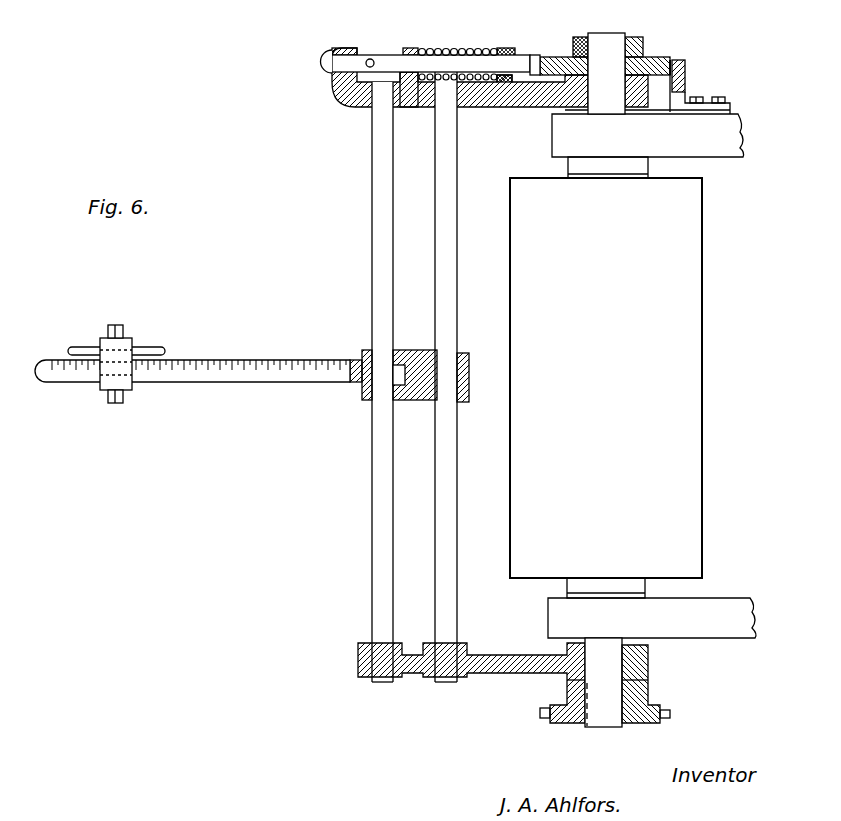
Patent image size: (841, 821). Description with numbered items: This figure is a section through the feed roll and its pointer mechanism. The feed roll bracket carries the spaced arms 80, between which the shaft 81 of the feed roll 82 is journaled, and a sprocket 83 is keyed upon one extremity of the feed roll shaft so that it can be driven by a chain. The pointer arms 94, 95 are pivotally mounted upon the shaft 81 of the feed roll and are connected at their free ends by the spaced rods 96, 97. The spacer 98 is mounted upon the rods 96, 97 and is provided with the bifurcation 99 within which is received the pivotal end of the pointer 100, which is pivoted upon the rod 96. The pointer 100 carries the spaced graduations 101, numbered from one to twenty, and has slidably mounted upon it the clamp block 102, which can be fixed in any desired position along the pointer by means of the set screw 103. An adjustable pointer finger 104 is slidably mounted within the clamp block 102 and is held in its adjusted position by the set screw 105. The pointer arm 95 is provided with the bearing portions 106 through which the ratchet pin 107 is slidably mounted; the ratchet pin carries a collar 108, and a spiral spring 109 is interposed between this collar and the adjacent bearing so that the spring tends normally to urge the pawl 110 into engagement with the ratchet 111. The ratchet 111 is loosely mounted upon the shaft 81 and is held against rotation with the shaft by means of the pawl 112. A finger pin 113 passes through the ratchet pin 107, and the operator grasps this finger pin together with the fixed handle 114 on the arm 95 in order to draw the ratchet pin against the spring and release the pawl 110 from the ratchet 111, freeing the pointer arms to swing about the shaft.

The spaced arms 80 is at (720, 150).
The shaft 81 is at (534, 57).
The feed roll 82 is at (716, 384).
The sprocket 83 is at (662, 708).
The pointer arm 94 is at (502, 672).
The pointer arm 95 is at (508, 100).
The rod 96 is at (372, 592).
The rod 97 is at (448, 605).
The spacer 98 is at (464, 352).
The bifurcation 99 is at (362, 400).
The pointer 100 is at (297, 360).
The graduations 101 is at (212, 380).
The clamp block 102 is at (102, 391).
The set screw 103 is at (122, 402).
The adjustable pointer finger 104 is at (157, 349).
The set screw 105 is at (120, 328).
The bearing portions 106 is at (412, 47).
The ratchet pin 107 is at (386, 55).
The collar 108 is at (510, 56).
The spiral spring 109 is at (414, 100).
The pawl 110 is at (560, 56).
The ratchet 111 is at (666, 60).
The pawl 112 is at (688, 73).
The finger pin 113 is at (367, 60).
The fixed handle 114 is at (322, 48).